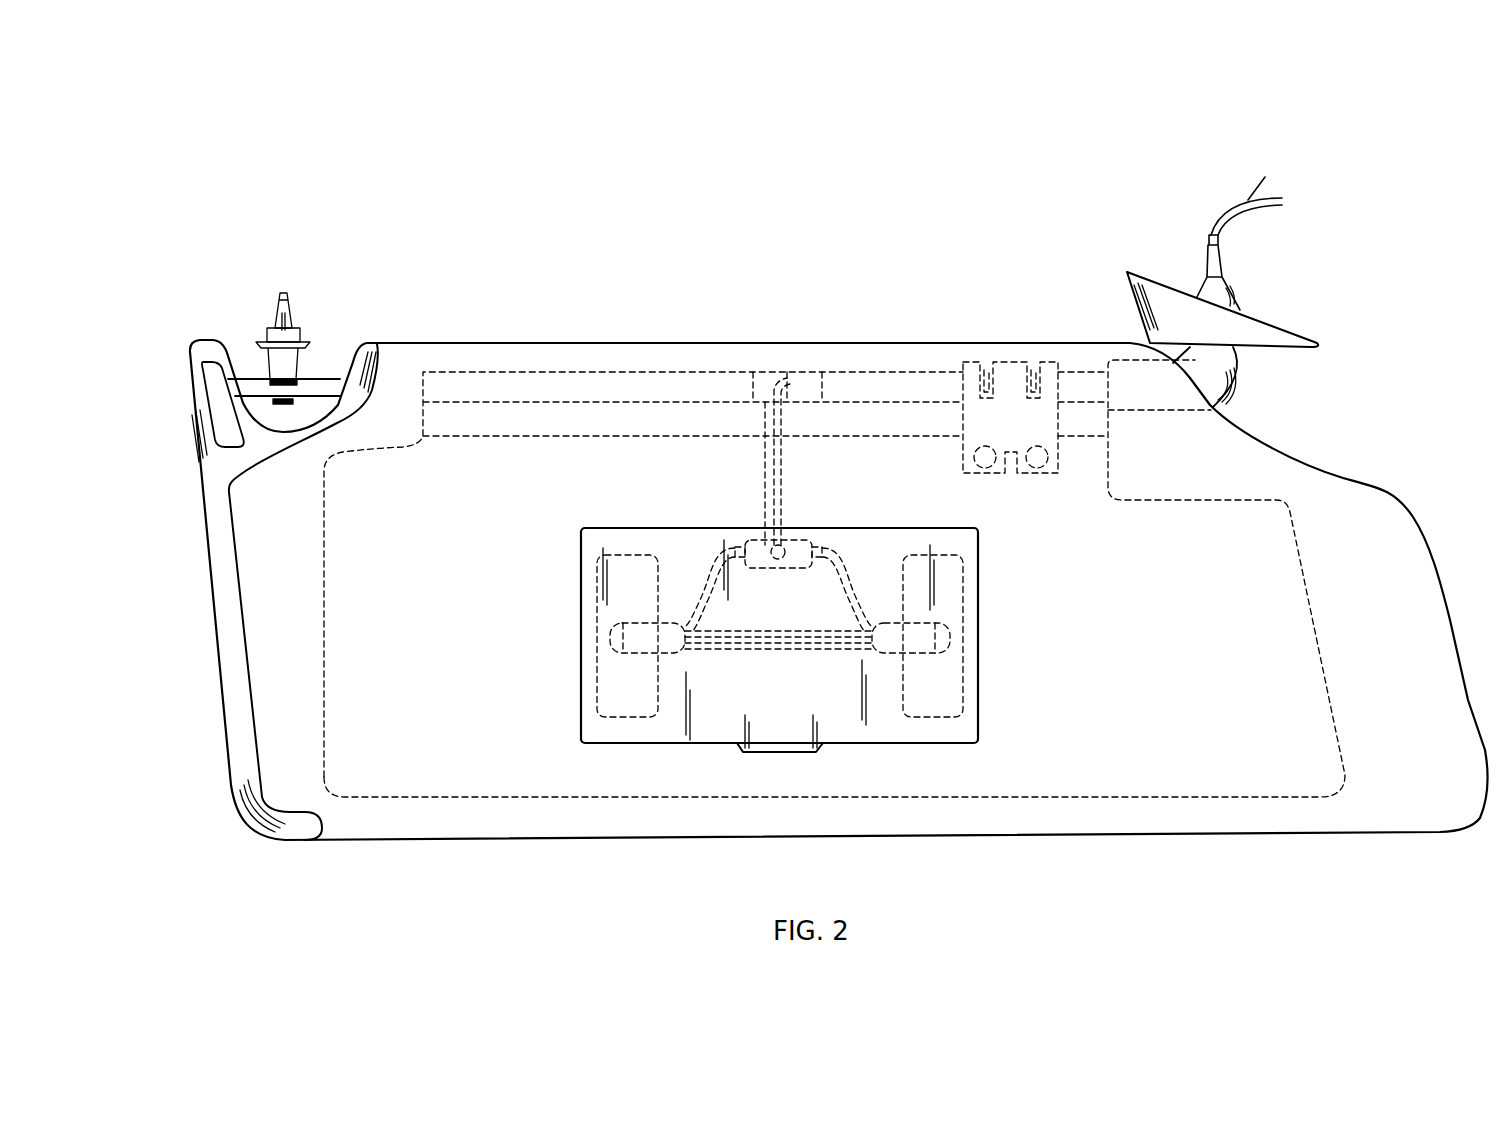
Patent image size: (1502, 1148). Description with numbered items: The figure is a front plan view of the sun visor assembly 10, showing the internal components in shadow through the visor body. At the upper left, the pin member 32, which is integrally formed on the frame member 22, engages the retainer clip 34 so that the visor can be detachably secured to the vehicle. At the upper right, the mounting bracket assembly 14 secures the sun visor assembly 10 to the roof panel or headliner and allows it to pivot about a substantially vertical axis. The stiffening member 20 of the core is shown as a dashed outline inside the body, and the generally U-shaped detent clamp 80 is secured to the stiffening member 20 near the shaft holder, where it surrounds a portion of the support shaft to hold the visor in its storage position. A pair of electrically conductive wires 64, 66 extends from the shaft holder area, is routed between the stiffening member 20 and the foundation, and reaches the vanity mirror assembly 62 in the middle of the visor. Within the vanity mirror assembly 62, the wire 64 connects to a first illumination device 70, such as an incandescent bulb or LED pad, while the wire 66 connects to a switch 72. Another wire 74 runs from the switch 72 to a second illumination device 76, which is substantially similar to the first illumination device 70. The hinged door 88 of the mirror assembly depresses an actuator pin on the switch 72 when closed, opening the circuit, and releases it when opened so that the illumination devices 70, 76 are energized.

The sun visor assembly 10 is at (321, 190).
The mounting bracket assembly 14 is at (1115, 288).
The stiffening member 20 is at (474, 808).
The frame member 22 is at (228, 831).
The pin member 32 is at (327, 385).
The retainer clip 34 is at (265, 358).
The vanity mirror assembly 62 is at (993, 609).
The wire 64 is at (1252, 198).
The wire 66 is at (1270, 202).
The first illumination device 70 is at (675, 640).
The switch 72 is at (782, 562).
The wire 74 is at (843, 555).
The second illumination device 76 is at (952, 703).
The detent clamp 80 is at (1005, 378).
The door 88 is at (955, 738).